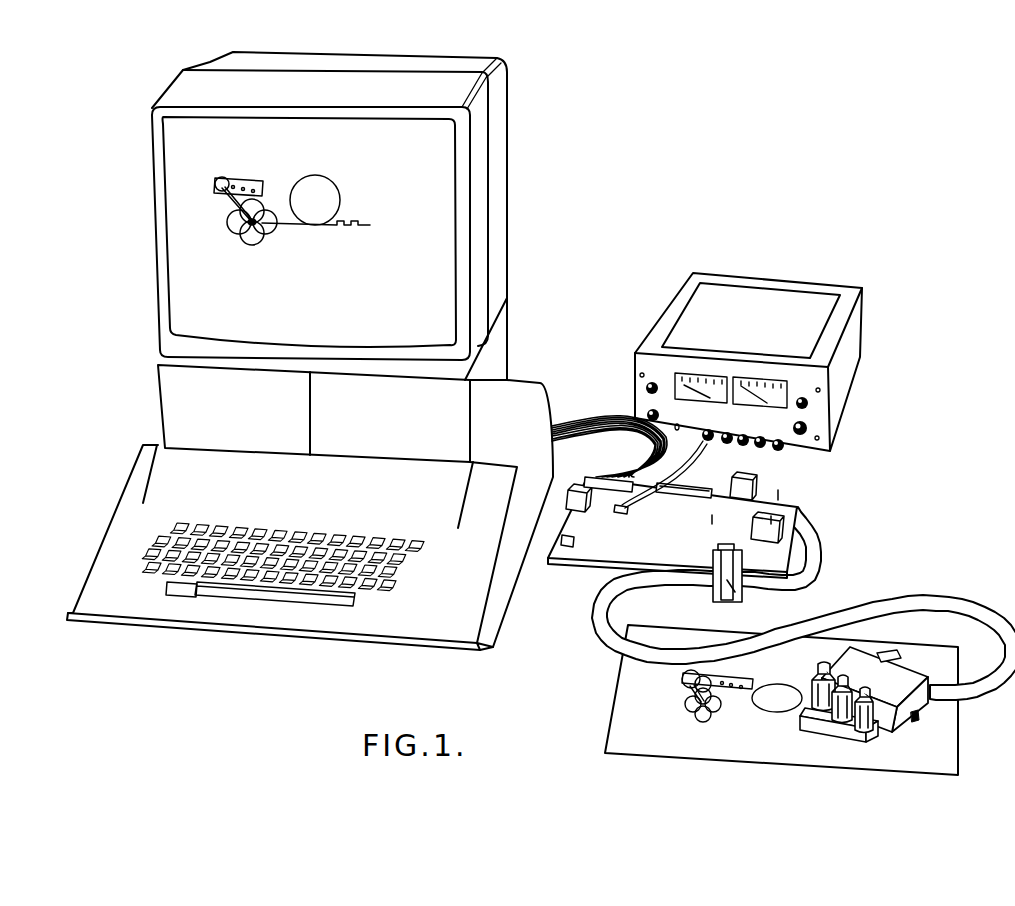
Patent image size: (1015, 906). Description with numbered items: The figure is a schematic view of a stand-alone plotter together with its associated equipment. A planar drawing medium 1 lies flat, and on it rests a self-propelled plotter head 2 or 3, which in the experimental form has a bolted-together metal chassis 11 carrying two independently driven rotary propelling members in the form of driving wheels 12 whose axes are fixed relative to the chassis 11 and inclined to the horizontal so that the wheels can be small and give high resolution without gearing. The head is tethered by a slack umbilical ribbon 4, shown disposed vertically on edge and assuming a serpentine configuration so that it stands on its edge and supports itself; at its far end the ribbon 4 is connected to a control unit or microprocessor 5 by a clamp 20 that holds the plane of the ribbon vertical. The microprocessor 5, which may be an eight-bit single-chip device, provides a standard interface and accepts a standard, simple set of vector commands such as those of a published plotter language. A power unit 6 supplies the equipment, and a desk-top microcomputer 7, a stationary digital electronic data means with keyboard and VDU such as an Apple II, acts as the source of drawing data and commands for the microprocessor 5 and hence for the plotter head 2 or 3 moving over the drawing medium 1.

The planar drawing medium 1 is at (628, 720).
The plotter head 2 is at (906, 646).
The plotter head 3 is at (908, 676).
The slack umbilical ribbon 4 is at (622, 648).
The control unit or microprocessor 5 is at (793, 545).
The power unit 6 is at (820, 410).
The desk-top microcomputer 7 is at (523, 390).
The chassis 11 is at (847, 731).
The driving wheels 12 is at (918, 720).
The clamp 20 is at (727, 590).